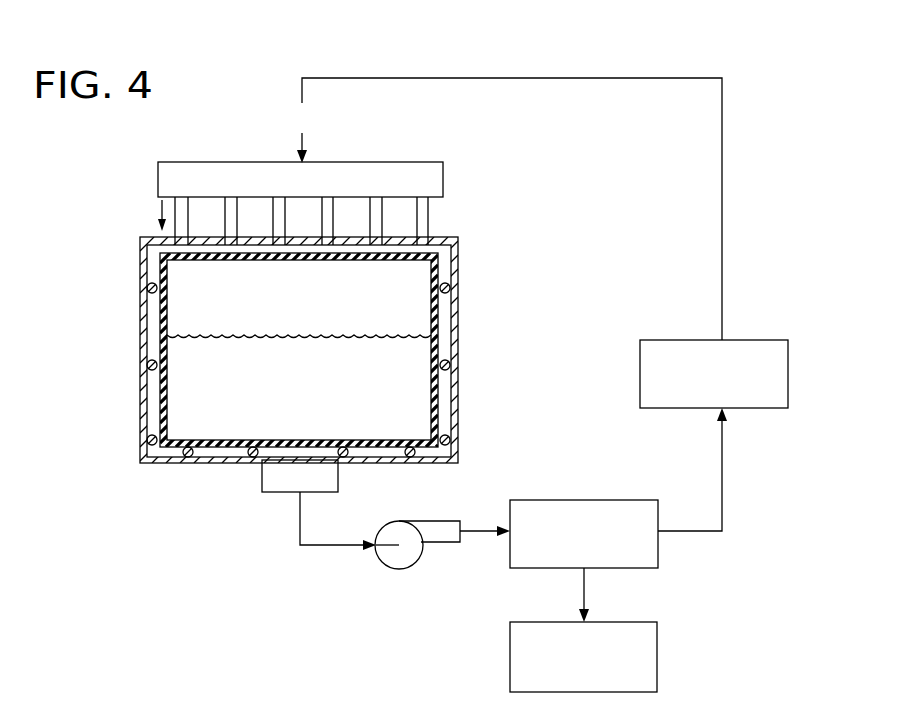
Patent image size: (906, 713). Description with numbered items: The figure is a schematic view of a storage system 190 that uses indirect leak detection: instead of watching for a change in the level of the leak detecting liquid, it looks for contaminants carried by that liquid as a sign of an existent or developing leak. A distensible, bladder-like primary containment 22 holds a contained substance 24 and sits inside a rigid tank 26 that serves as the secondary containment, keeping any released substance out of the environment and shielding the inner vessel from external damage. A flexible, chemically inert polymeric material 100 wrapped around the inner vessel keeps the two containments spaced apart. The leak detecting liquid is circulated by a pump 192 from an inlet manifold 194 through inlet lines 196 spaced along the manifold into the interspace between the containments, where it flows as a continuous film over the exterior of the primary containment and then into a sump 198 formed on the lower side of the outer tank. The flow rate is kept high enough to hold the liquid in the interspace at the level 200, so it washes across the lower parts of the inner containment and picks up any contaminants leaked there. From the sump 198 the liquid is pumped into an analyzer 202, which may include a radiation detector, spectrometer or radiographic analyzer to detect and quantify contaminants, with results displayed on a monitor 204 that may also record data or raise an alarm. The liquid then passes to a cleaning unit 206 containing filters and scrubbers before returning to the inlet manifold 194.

The storage system 190 is at (462, 49).
The inlet manifold 194 is at (158, 178).
The inlet lines 196 is at (400, 210).
The polymeric material 100 is at (296, 350).
The rigid tank 26 is at (140, 314).
The primary containment 22 is at (440, 312).
The contained substance 24 is at (247, 389).
The liquid level 200 is at (150, 425).
The sump 198 is at (262, 478).
The pump 192 is at (437, 521).
The analyzer 202 is at (575, 500).
The monitor 204 is at (510, 640).
The cleaning unit 206 is at (655, 340).